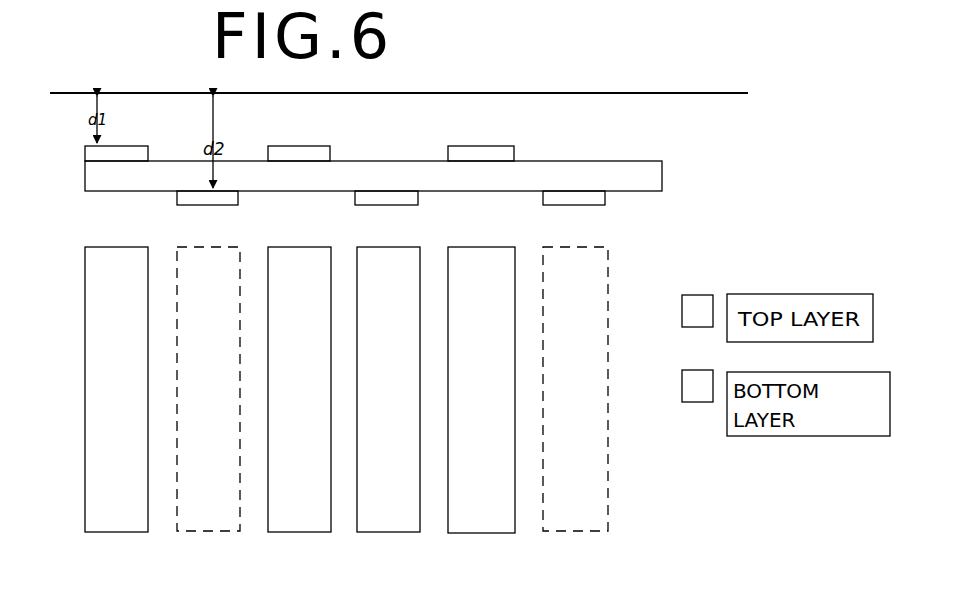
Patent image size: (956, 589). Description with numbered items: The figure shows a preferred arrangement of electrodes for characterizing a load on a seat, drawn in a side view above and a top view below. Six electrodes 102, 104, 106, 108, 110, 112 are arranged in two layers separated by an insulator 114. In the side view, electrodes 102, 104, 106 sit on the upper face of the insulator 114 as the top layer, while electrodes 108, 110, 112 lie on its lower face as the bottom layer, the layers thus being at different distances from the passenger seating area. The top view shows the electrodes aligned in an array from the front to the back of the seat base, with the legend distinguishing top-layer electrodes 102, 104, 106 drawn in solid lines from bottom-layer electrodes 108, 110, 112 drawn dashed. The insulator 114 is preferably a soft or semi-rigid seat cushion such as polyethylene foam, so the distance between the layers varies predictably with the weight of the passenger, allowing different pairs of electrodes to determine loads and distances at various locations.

The electrode 102 is at (120, 143).
The electrode 104 is at (290, 143).
The electrode 106 is at (475, 143).
The electrode 108 is at (197, 209).
The electrode 110 is at (381, 244).
The electrode 112 is at (580, 244).
The insulator 114 is at (608, 158).